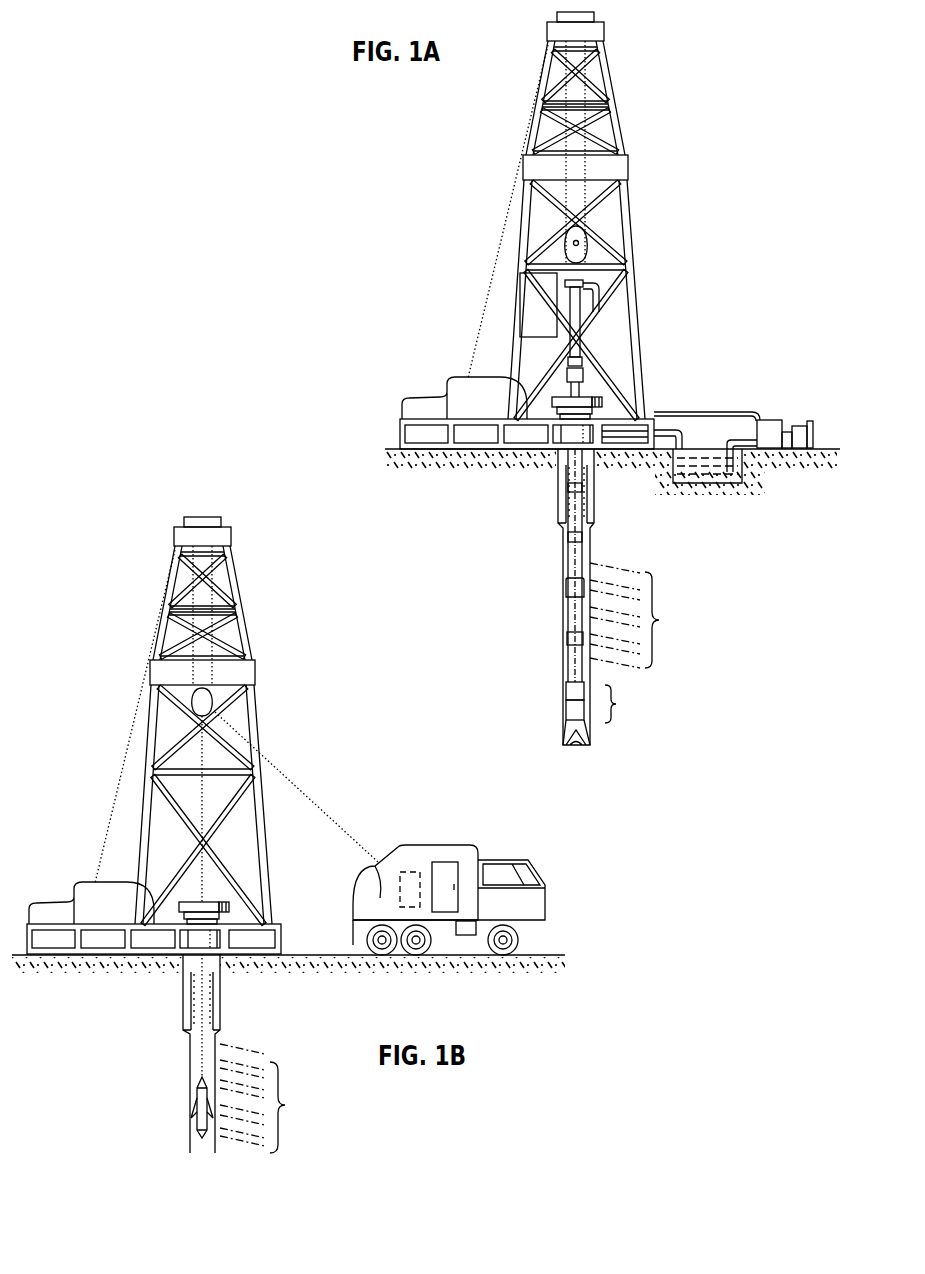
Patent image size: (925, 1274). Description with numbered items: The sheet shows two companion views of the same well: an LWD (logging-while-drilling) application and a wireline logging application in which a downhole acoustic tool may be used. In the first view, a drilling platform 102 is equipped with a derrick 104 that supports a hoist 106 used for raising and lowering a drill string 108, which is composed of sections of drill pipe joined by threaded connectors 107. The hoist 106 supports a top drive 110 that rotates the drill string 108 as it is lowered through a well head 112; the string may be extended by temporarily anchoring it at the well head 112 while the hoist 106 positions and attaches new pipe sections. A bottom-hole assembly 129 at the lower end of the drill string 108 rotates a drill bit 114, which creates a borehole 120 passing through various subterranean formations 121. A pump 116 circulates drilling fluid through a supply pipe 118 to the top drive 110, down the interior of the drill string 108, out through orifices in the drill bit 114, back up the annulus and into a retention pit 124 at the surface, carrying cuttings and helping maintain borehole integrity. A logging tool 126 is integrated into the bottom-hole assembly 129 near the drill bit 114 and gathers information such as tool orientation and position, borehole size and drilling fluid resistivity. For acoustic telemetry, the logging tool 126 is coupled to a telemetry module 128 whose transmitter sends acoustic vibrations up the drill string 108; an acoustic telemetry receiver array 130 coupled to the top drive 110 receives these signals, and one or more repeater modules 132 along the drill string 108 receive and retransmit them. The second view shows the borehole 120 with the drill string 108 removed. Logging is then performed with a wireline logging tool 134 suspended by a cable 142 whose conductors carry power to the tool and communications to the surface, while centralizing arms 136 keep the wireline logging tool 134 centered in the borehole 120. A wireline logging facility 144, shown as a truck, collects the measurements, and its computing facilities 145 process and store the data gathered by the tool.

In FIG. 1A, the drilling platform 102 is at (400, 427).
In FIG. 1B, the drilling platform 102 is at (281, 929).
In FIG. 1A, the derrick 104 is at (612, 129).
In FIG. 1B, the derrick 104 is at (268, 893).
In FIG. 1A, the hoist 106 is at (585, 241).
In FIG. 1B, the hoist 106 is at (212, 702).
In FIG. 1A, the threaded connectors 107 is at (568, 537).
In FIG. 1A, the drill string 108 is at (582, 565).
In FIG. 1A, the top drive 110 is at (577, 302).
In FIG. 1A, the well head 112 is at (590, 397).
In FIG. 1B, the well head 112 is at (217, 902).
In FIG. 1A, the drill bit 114 is at (585, 733).
In FIG. 1A, the pump 116 is at (768, 421).
In FIG. 1A, the supply pipe 118 is at (718, 411).
In FIG. 1A, the borehole 120 is at (563, 578).
In FIG. 1B, the borehole 120 is at (190, 1057).
In FIG. 1A, the subterranean formations 121 is at (646, 615).
In FIG. 1B, the subterranean formations 121 is at (274, 1098).
In FIG. 1A, the retention pit 124 is at (687, 473).
In FIG. 1A, the logging tool 126 is at (568, 713).
In FIG. 1A, the telemetry module 128 is at (568, 697).
In FIG. 1A, the bottom-hole assembly 129 is at (636, 704).
In FIG. 1A, the acoustic telemetry receiver array 130 is at (583, 358).
In FIG. 1A, the repeater module 132 is at (568, 593).
In FIG. 1B, the wireline logging tool 134 is at (200, 1098).
In FIG. 1B, the centralizing arms 136 is at (192, 1118).
In FIG. 1B, the cable 142 is at (270, 765).
In FIG. 1B, the wireline logging facility 144 is at (463, 845).
In FIG. 1B, the computing facilities 145 is at (412, 872).